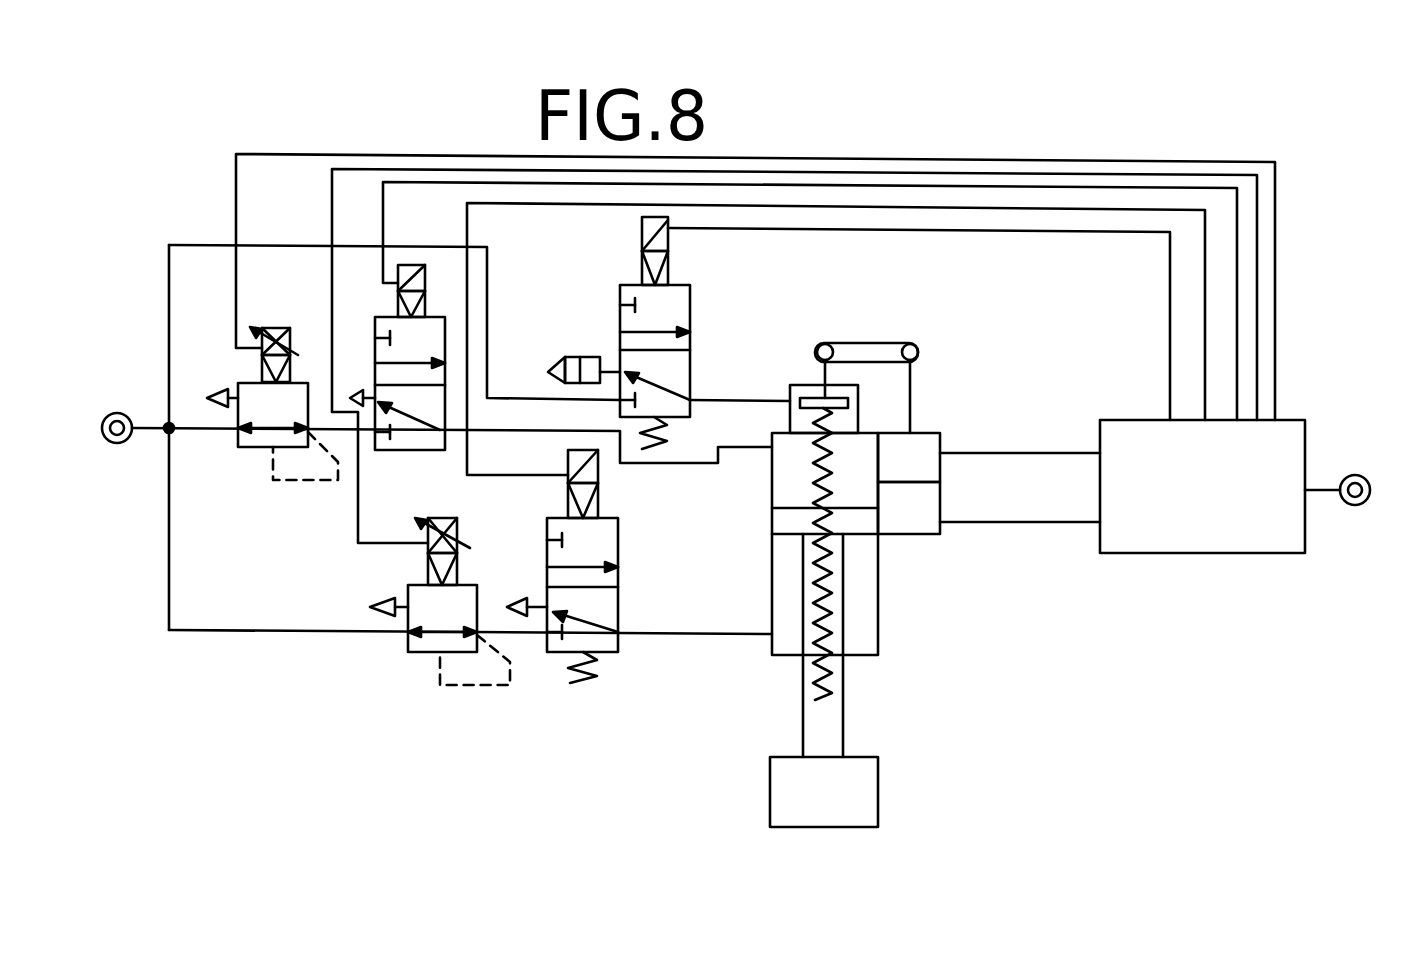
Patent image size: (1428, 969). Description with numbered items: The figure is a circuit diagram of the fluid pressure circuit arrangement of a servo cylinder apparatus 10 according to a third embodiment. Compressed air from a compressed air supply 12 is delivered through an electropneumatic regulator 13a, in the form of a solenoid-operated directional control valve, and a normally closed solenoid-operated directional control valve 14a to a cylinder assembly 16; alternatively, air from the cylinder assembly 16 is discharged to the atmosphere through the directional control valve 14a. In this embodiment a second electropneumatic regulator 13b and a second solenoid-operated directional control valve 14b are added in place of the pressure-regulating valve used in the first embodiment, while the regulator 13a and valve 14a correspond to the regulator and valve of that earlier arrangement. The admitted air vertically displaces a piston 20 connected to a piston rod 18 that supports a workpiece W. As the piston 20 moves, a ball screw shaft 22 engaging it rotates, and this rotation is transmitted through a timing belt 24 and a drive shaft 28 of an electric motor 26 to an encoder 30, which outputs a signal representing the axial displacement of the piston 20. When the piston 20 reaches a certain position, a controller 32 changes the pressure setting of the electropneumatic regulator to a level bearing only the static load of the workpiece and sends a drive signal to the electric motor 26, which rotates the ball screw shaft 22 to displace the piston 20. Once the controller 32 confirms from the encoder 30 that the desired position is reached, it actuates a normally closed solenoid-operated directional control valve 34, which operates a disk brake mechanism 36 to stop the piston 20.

The servo cylinder apparatus 10 is at (988, 148).
The compressed air supply 12 is at (117, 412).
The electropneumatic regulator 13a is at (417, 655).
The electropneumatic regulator 13b is at (250, 448).
The solenoid-operated directional control valve 14a is at (557, 655).
The solenoid-operated directional control valve 14b is at (407, 453).
The cylinder assembly 16 is at (757, 557).
The piston rod 18 is at (805, 728).
The piston 20 is at (782, 522).
The ball screw shaft 22 is at (833, 590).
The timing belt 24 is at (873, 340).
The electric motor 26 is at (938, 445).
The drive shaft 28 is at (913, 387).
The encoder 30 is at (927, 528).
The controller 32 is at (1130, 418).
The normally closed solenoid-operated directional control valve 34 is at (690, 305).
The disk brake mechanism 36 is at (803, 383).